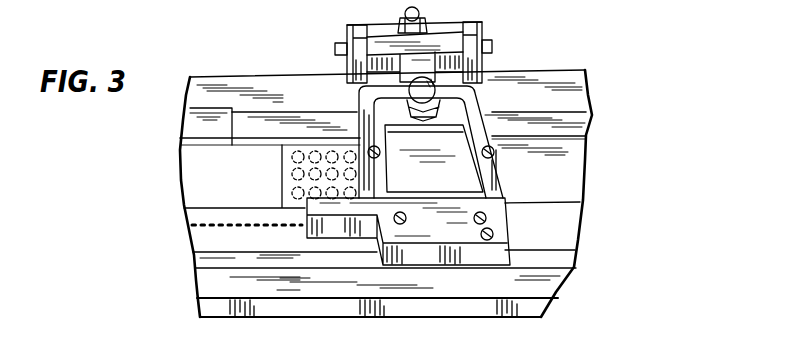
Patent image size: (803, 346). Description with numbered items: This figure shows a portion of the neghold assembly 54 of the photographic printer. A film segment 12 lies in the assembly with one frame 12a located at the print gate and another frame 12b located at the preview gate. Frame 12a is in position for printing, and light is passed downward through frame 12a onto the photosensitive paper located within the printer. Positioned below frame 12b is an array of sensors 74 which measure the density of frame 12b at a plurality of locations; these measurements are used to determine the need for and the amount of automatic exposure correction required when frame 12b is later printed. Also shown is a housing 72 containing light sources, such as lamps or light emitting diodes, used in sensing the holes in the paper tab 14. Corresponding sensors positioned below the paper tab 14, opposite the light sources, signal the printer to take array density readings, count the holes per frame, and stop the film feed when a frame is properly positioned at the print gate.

The neghold assembly 54 is at (389, 102).
The film segment 12 is at (307, 145).
The frame 12a is at (460, 177).
The frame 12b is at (288, 187).
The array of sensors 74 is at (289, 159).
The housing 72 is at (457, 227).
The paper tab 14 is at (200, 243).